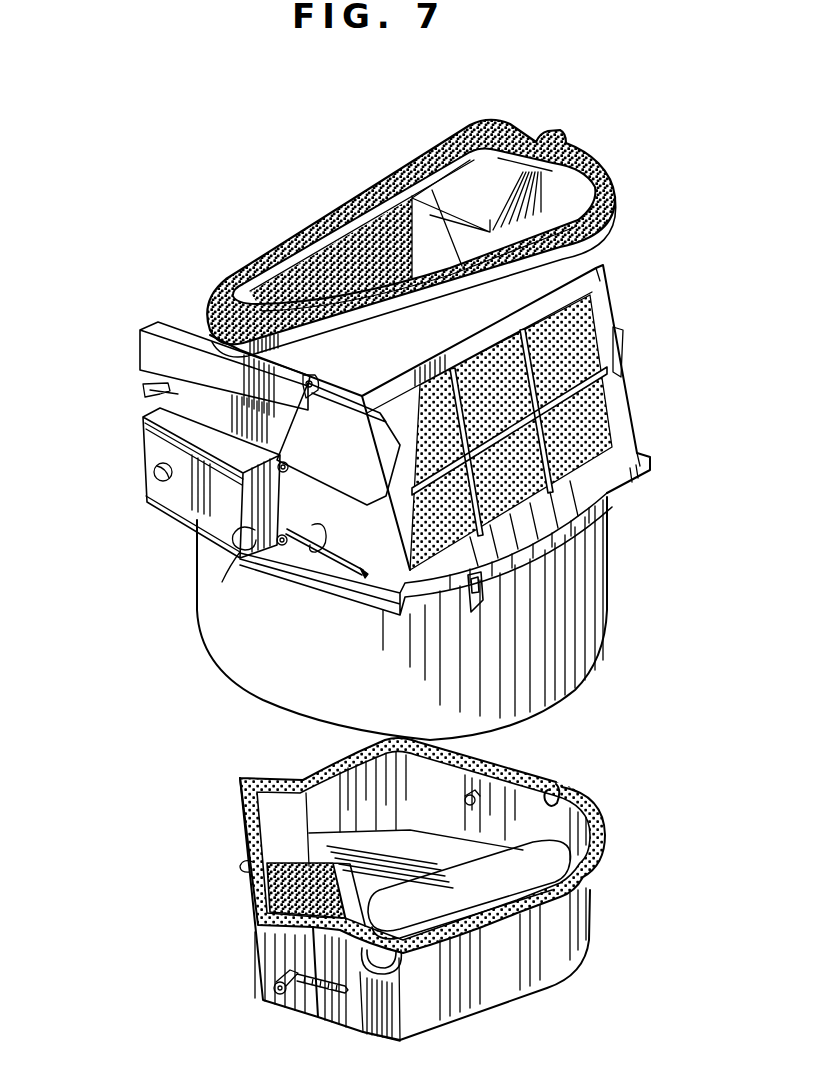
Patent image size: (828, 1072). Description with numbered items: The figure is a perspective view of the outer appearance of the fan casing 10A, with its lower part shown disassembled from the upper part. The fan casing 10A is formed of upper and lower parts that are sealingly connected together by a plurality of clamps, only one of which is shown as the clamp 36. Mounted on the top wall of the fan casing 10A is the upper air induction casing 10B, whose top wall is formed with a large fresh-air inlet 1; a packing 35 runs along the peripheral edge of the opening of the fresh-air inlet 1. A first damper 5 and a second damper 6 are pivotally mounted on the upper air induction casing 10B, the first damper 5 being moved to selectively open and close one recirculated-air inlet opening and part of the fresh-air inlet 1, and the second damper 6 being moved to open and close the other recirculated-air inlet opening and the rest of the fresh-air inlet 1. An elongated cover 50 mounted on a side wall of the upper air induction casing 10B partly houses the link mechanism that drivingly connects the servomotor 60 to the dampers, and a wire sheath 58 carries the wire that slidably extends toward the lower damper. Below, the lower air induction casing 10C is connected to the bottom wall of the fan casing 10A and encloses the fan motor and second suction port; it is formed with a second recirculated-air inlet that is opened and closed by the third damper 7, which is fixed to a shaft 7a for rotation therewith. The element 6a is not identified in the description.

The fresh-air inlet 1 is at (490, 183).
The packing 35 is at (600, 163).
The second damper 6 is at (360, 257).
The frame latch 6a is at (143, 387).
The elongated cover 50 is at (150, 327).
The first damper 5 is at (600, 307).
The upper air induction casing 10B is at (387, 357).
The servomotor 60 is at (158, 486).
The wire sheath 58 is at (345, 565).
The fan casing 10A is at (223, 633).
The clamp 36 is at (477, 606).
The lower air induction casing 10C is at (575, 922).
The third damper 7 is at (293, 893).
The shaft 7a is at (277, 997).